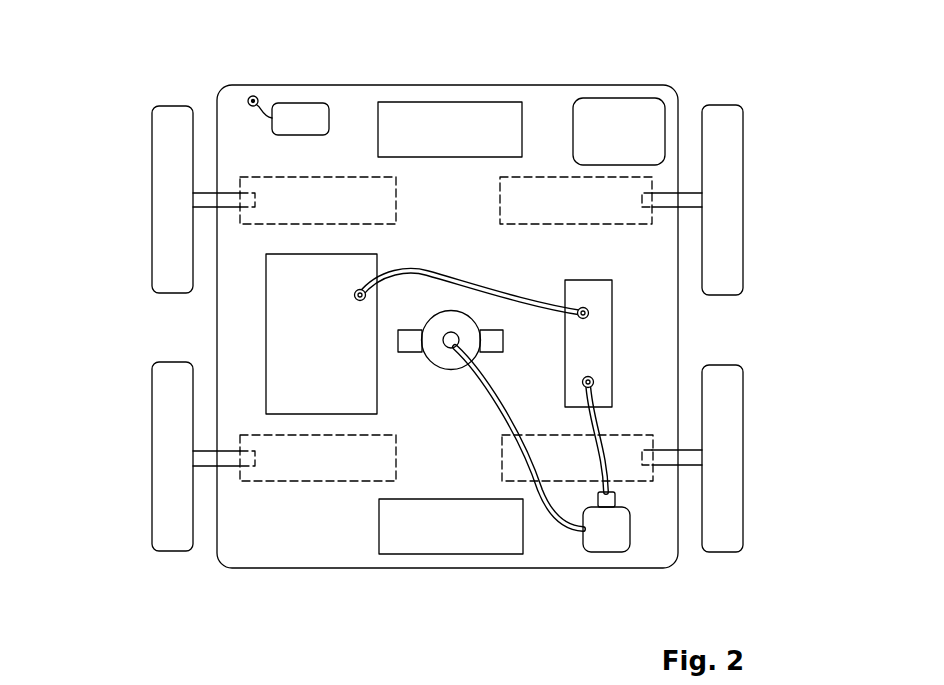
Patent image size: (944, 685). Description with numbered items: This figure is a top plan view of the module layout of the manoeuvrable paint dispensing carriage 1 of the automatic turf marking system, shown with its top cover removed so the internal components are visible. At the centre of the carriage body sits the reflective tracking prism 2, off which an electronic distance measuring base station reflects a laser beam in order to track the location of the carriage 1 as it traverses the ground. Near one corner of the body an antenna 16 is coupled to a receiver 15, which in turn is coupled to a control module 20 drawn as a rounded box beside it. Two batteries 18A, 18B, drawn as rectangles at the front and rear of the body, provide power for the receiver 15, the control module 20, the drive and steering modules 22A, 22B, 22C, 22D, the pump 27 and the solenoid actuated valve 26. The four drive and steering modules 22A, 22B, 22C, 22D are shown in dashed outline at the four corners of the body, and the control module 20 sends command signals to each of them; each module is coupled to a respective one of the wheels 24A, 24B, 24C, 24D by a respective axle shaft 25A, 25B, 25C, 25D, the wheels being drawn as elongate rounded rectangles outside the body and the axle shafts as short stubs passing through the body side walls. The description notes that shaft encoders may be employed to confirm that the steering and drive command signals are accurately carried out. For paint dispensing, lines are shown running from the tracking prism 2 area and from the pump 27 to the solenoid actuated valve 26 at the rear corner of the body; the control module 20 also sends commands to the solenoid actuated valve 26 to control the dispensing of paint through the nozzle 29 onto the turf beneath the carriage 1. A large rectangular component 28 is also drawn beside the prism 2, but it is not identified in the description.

The paint dispensing carriage 1 is at (725, 57).
The reflective tracking prism 2 is at (437, 313).
The receiver 15 is at (320, 112).
The antenna 16 is at (248, 98).
The battery 18A is at (503, 115).
The battery 18B is at (432, 537).
The control module 20 is at (623, 113).
The drive and steering module 22A is at (292, 214).
The drive and steering module 22B is at (550, 214).
The drive and steering module 22C is at (292, 472).
The drive and steering module 22D is at (551, 472).
The wheel 24A is at (157, 183).
The wheel 24B is at (735, 170).
The wheel 24C is at (158, 504).
The wheel 24D is at (735, 515).
The axle shaft 25A is at (207, 193).
The axle shaft 25B is at (693, 202).
The axle shaft 25C is at (208, 468).
The axle shaft 25D is at (685, 445).
The solenoid actuated valve 26 is at (608, 533).
The pump 27 is at (571, 362).
The battery 28 is at (304, 379).
The nozzle 29 is at (440, 353).